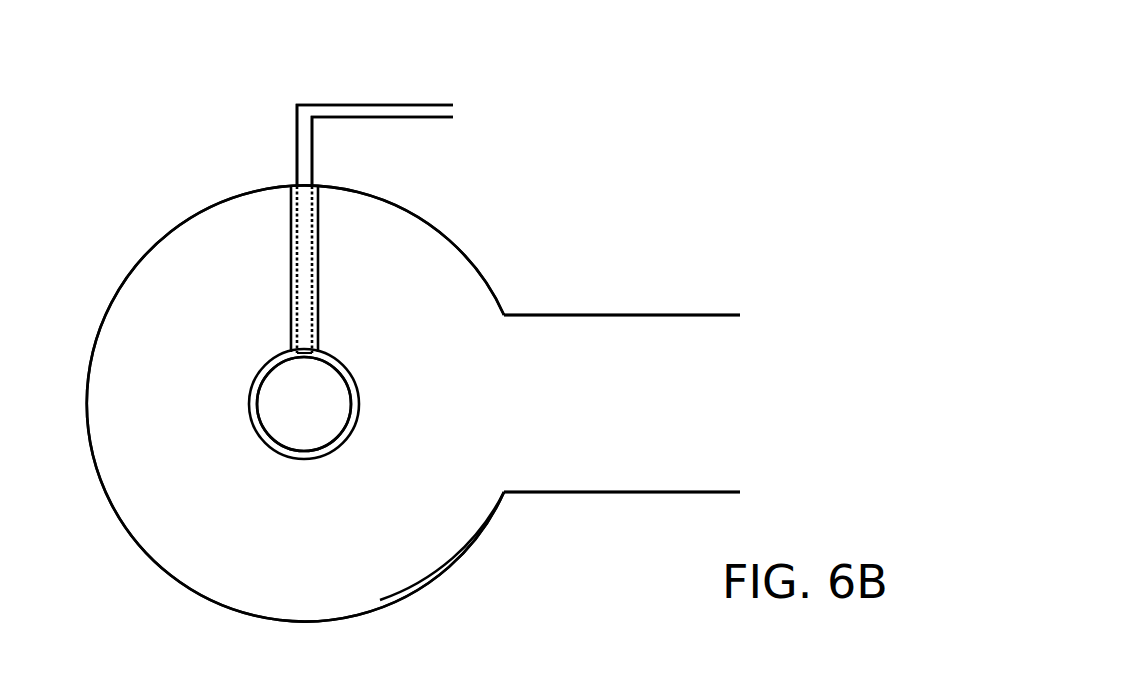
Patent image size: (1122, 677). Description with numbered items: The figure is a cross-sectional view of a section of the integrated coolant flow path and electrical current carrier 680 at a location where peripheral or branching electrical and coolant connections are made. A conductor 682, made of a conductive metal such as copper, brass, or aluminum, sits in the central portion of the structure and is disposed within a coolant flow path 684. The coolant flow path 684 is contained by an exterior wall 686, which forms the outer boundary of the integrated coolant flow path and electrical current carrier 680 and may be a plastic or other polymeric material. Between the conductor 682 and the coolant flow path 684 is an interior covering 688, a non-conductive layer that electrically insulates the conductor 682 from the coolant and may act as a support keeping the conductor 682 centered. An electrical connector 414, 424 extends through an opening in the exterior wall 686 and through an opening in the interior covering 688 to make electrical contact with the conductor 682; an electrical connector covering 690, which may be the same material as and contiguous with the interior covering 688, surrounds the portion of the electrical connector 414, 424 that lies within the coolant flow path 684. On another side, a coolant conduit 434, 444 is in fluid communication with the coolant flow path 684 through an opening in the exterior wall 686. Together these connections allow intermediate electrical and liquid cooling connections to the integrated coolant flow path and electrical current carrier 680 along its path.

The integrated coolant flow path and electrical current carrier 680 is at (563, 189).
The coolant flow path 684 is at (323, 607).
The exterior wall 686 is at (445, 571).
The interior covering 688 is at (357, 375).
The conductor 682 is at (323, 414).
The electrical connector covering 690 is at (291, 221).
The electrical connector 414 is at (340, 104).
The electrical connector 424 is at (375, 145).
The coolant conduit 434 is at (583, 314).
The coolant conduit 444 is at (622, 403).